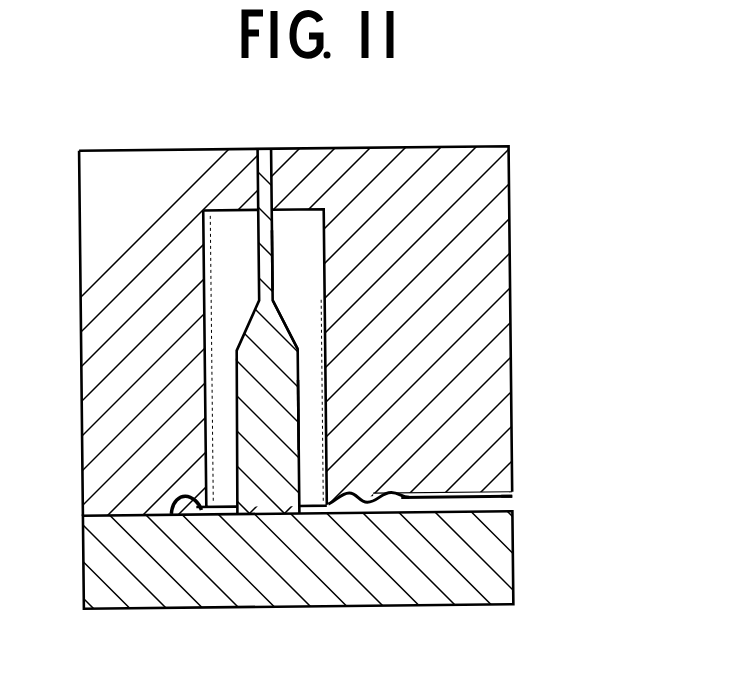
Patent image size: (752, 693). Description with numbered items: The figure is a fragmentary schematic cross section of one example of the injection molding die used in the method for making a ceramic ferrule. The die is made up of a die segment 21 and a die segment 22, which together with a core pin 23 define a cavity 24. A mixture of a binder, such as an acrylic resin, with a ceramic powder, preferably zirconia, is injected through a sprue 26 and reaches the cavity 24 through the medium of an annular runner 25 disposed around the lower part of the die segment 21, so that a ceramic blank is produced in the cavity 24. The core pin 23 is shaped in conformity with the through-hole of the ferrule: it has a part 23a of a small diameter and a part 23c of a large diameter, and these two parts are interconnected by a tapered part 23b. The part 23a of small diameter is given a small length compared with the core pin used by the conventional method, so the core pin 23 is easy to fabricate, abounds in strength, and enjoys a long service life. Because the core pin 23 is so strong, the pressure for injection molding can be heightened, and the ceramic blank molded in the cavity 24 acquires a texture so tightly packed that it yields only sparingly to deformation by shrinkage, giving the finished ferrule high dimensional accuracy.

The die segment 21 is at (468, 148).
The die segment 22 is at (468, 607).
The core pin 23 is at (282, 242).
The part of a small diameter 23a is at (274, 263).
The tapered part 23b is at (286, 325).
The part of a large diameter 23c is at (299, 421).
The cavity 24 is at (298, 463).
The annular runner 25 is at (191, 505).
The sprue 26 is at (511, 506).